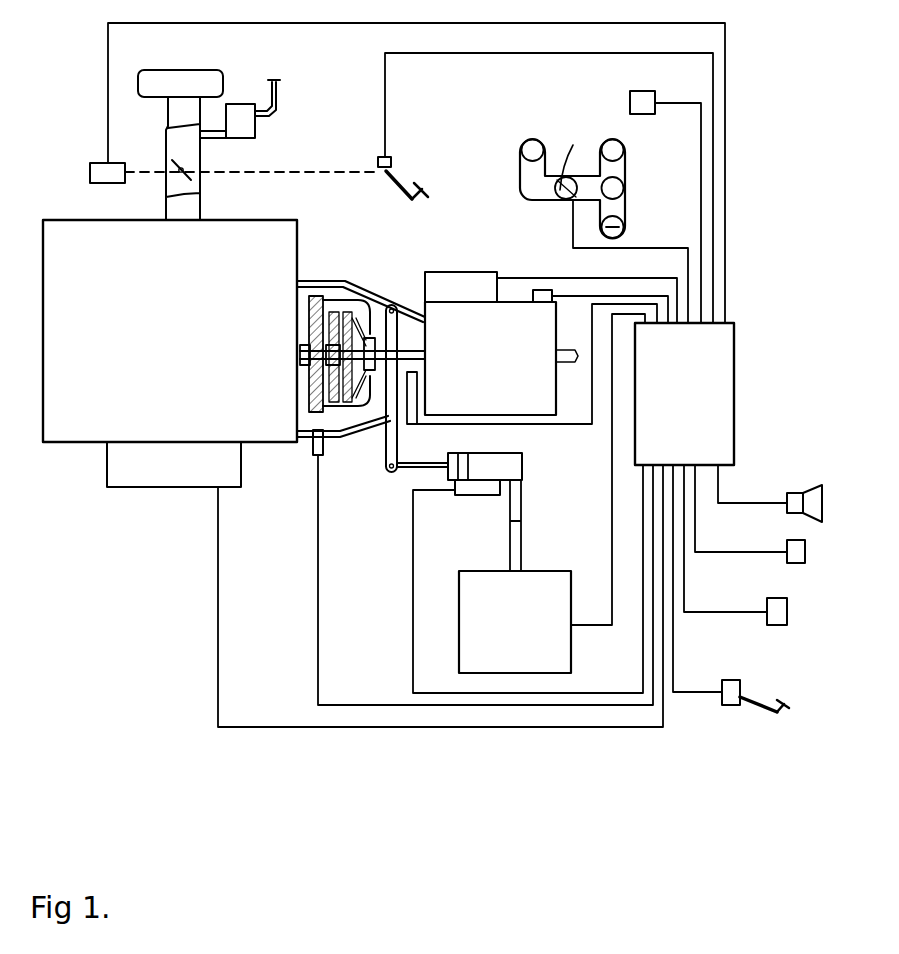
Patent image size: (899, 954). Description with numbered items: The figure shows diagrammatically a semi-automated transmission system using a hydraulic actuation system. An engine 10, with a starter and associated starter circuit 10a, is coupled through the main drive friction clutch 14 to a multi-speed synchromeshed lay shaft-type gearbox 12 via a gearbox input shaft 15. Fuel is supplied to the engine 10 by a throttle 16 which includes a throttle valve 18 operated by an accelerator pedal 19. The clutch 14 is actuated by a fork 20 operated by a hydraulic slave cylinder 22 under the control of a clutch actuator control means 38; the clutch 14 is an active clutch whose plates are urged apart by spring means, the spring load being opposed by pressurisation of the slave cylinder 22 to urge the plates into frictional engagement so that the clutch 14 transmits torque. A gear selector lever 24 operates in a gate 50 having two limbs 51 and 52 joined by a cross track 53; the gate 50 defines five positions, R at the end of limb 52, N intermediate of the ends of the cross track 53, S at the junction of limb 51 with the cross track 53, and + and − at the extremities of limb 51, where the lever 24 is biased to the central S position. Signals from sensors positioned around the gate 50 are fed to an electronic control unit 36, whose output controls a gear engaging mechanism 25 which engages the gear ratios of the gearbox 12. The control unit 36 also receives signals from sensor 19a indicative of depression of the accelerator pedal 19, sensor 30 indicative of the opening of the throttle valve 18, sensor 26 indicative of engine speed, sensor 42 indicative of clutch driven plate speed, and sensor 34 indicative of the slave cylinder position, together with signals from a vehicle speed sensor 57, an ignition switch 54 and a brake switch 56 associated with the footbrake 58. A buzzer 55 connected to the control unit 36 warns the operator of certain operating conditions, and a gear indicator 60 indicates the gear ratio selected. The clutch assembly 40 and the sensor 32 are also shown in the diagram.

The engine 10 is at (170, 331).
The starter and associated starter circuit 10a is at (174, 464).
The gearbox 12 is at (501, 358).
The main drive friction clutch 14 is at (330, 275).
The gearbox input shaft 15 is at (418, 355).
The throttle 16 is at (216, 182).
The throttle valve 18 is at (178, 172).
The accelerator pedal 19 is at (402, 182).
The sensor 19a is at (390, 157).
The fork 20 is at (386, 462).
The hydraulic slave cylinder 22 is at (500, 462).
The gear selector lever 24 is at (576, 154).
The gear engaging mechanism 25 is at (461, 288).
The sensor 26 is at (312, 446).
The sensor 30 is at (90, 172).
The transmission speed sensor 32 is at (541, 290).
The sensor 34 is at (480, 496).
The electronic control unit 36 is at (684, 394).
The clutch actuator control means 38 is at (515, 622).
The clutch 40 is at (356, 291).
The sensor 42 is at (417, 391).
The gate 50 is at (567, 171).
The limb 51 is at (622, 169).
The limb 52 is at (519, 180).
The cross track 53 is at (546, 201).
The ignition switch 54 is at (773, 600).
The buzzer 55 is at (792, 496).
The brake switch 56 is at (727, 684).
The vehicle speed sensor 57 is at (792, 542).
The footbrake 58 is at (758, 711).
The gear indicator 60 is at (630, 106).